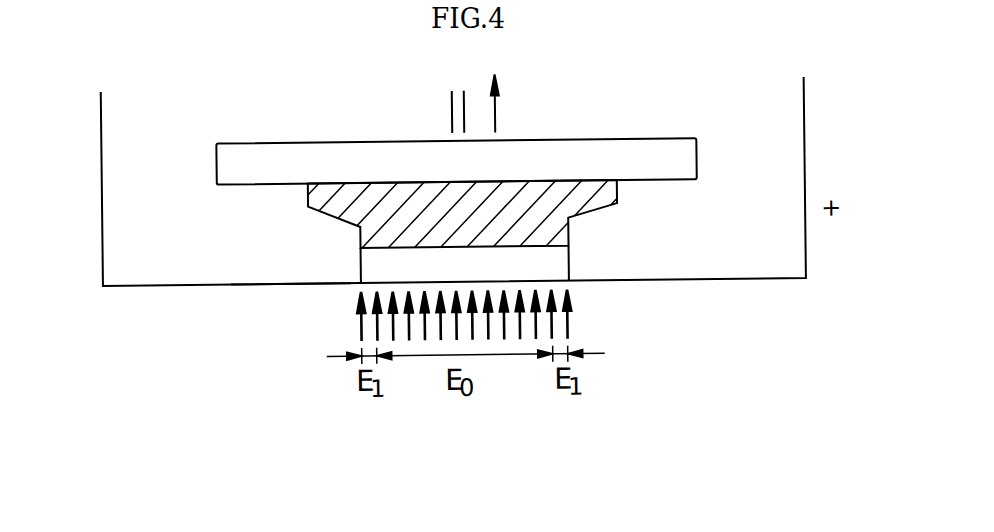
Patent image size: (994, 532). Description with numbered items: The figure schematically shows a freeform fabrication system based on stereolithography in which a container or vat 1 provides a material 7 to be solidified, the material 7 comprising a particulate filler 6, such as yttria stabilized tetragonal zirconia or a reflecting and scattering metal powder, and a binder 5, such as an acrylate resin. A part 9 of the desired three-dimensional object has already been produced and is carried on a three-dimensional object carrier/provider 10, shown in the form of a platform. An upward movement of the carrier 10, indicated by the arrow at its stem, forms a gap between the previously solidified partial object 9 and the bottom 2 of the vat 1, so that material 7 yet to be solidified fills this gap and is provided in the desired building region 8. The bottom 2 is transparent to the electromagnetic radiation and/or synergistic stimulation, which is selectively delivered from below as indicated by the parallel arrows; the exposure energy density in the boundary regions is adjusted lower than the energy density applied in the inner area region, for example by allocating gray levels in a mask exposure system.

The container or vat 1 is at (105, 213).
The bottom of the container or vat 2 is at (288, 282).
The binder 5 is at (775, 177).
The particulate filler 6 is at (790, 245).
The material to be solidified 7 is at (850, 183).
The building region 8 is at (385, 265).
The part of the three-dimensional object 9 is at (563, 203).
The three-dimensional object carrier/provider 10 is at (456, 128).